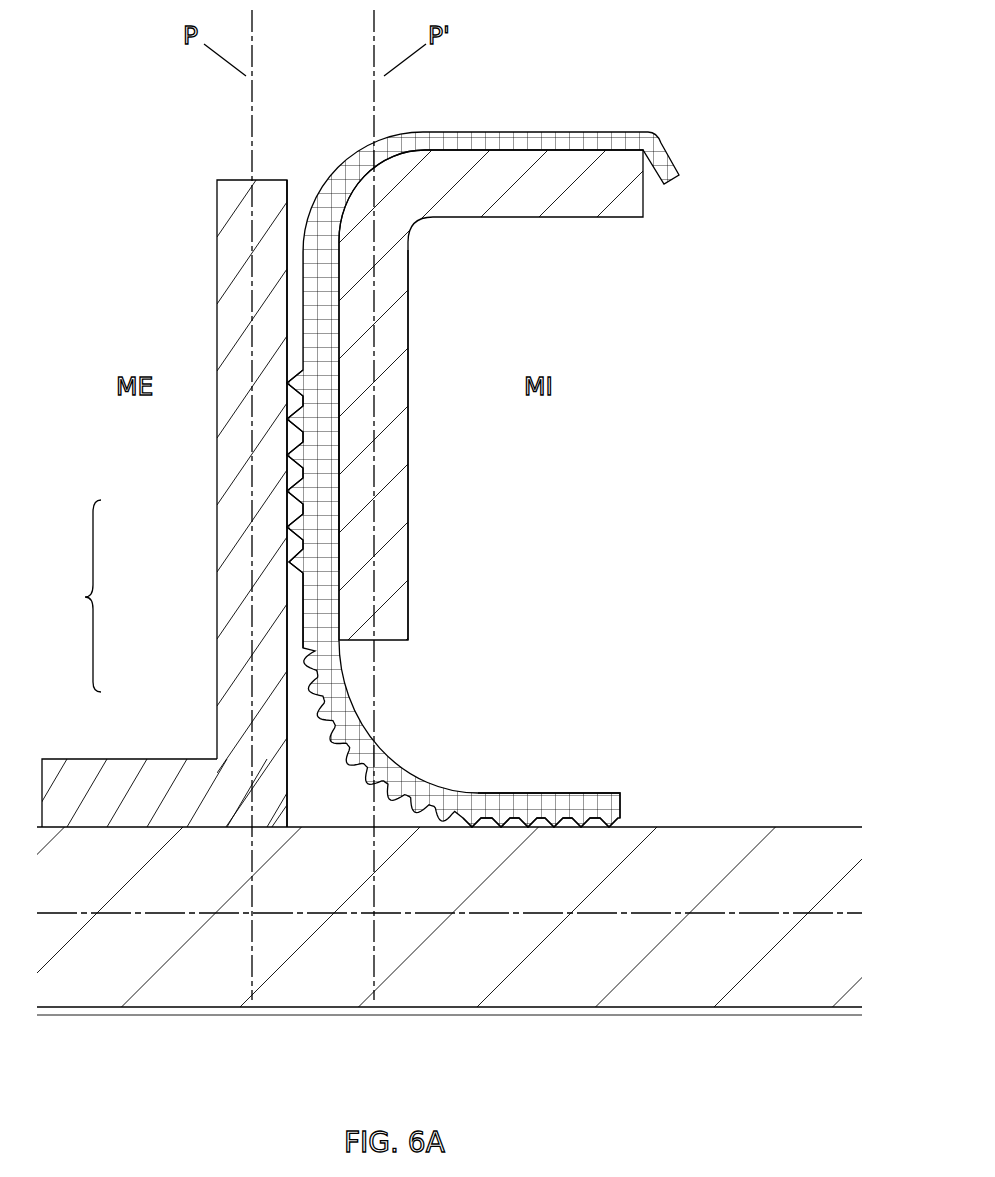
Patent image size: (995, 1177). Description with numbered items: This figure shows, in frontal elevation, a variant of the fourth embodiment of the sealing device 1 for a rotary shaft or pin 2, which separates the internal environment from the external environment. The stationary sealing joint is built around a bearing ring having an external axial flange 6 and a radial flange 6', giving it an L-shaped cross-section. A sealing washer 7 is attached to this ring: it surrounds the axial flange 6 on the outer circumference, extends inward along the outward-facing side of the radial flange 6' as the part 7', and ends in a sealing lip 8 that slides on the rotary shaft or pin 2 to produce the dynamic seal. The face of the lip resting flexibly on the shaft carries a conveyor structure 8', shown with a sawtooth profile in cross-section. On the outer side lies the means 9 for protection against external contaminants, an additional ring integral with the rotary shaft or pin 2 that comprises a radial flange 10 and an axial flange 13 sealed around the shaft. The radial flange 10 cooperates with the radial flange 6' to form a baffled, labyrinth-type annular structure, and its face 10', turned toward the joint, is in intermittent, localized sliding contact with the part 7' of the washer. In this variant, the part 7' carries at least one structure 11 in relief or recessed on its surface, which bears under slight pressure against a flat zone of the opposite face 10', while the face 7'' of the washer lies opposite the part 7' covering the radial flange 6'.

The sealing device 1 is at (146, 180).
The rotary shaft or pin 2 is at (668, 845).
The axial flange 6 is at (497, 395).
The radial flange 6' is at (445, 445).
The sealing washer 7 is at (483, 440).
The part of the sealing washer 7' is at (397, 465).
The face of the washer 7'' is at (387, 588).
The sealing lip 8 is at (549, 735).
The conveyor structure 8' is at (540, 756).
The means for protection against external contaminants 9 is at (79, 596).
The radial flange 10 is at (201, 487).
The face of the radial flange 10' is at (199, 503).
The structure in relief and/or recessed 11 is at (288, 467).
The axial flange 13 is at (150, 757).